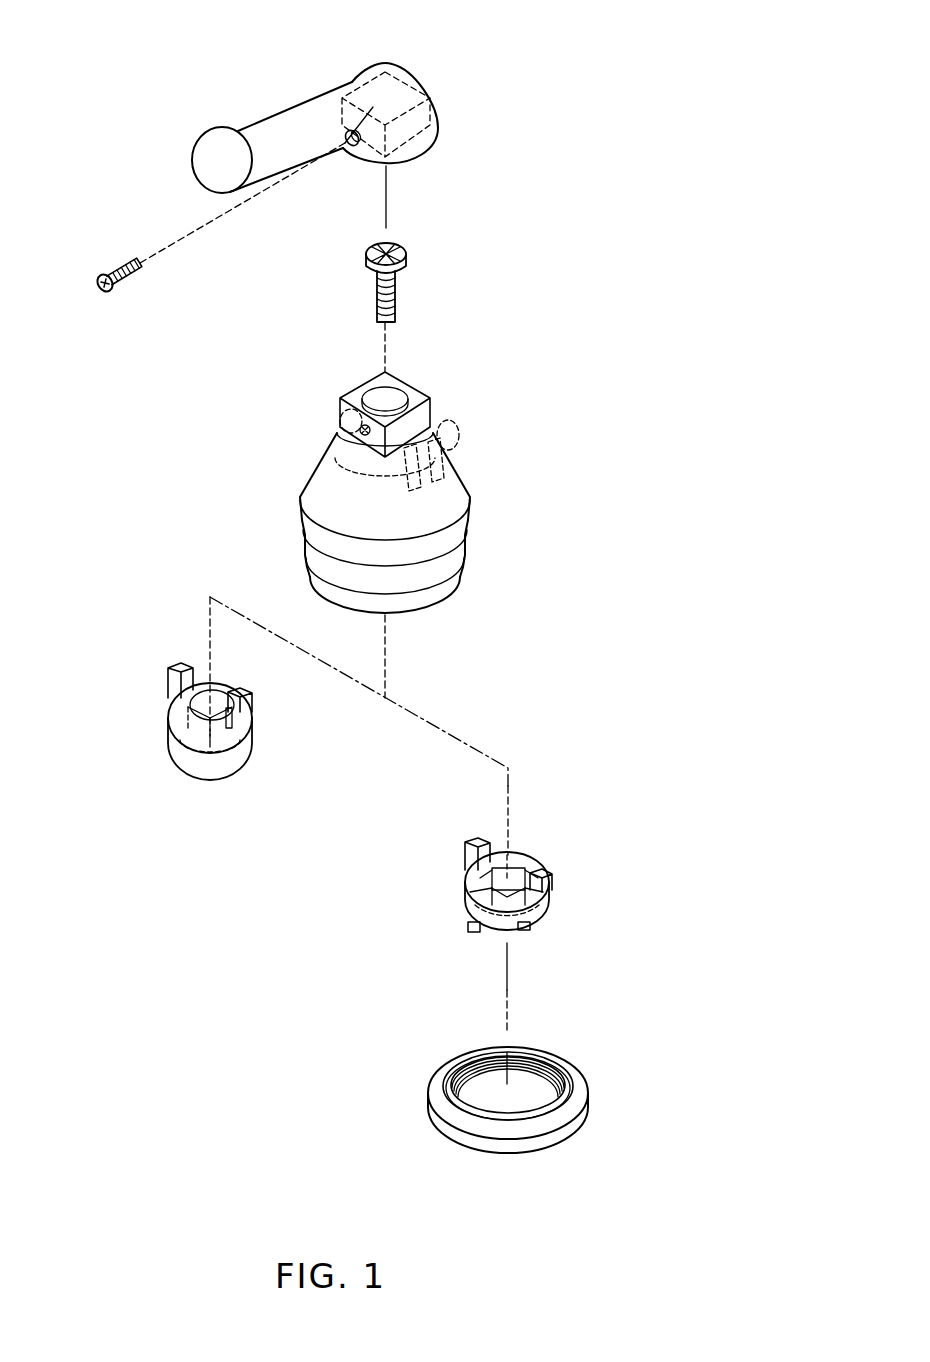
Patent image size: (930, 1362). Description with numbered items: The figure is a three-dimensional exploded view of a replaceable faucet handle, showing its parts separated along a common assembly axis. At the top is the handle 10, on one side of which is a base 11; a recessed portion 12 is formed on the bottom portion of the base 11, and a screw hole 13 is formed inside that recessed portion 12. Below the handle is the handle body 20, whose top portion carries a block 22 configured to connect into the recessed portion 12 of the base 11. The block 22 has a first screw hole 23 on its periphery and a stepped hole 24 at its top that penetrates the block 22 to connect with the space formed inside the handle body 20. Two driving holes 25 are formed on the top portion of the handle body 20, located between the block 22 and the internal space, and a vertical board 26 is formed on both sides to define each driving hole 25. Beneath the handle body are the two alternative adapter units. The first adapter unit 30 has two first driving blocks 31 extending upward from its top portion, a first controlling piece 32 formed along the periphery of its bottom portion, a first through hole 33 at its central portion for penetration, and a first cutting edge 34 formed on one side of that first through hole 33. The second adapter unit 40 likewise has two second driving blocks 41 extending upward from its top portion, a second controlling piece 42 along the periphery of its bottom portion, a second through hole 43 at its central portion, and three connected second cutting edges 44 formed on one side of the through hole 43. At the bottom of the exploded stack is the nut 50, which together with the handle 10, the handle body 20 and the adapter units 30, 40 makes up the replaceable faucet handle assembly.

The handle 10 is at (351, 115).
The base 11 is at (433, 140).
The recessed portion 12 is at (417, 72).
The screw hole 13 is at (346, 145).
The handle body 20 is at (478, 585).
The block 22 is at (370, 382).
The first screw hole 23 is at (367, 437).
The stepped hole 24 is at (397, 392).
The driving holes 25 is at (340, 418).
The vertical board 26 is at (440, 432).
The first adapter unit 30 is at (217, 719).
The first driving blocks 31 is at (177, 672).
The first controlling piece 32 is at (185, 768).
The first through hole 33 is at (217, 698).
The first cutting edge 34 is at (177, 737).
The second adapter unit 40 is at (512, 890).
The second driving blocks 41 is at (465, 852).
The second controlling piece 42 is at (467, 930).
The second through hole 43 is at (533, 872).
The second cutting edges 44 is at (510, 862).
The nut 50 is at (598, 1149).